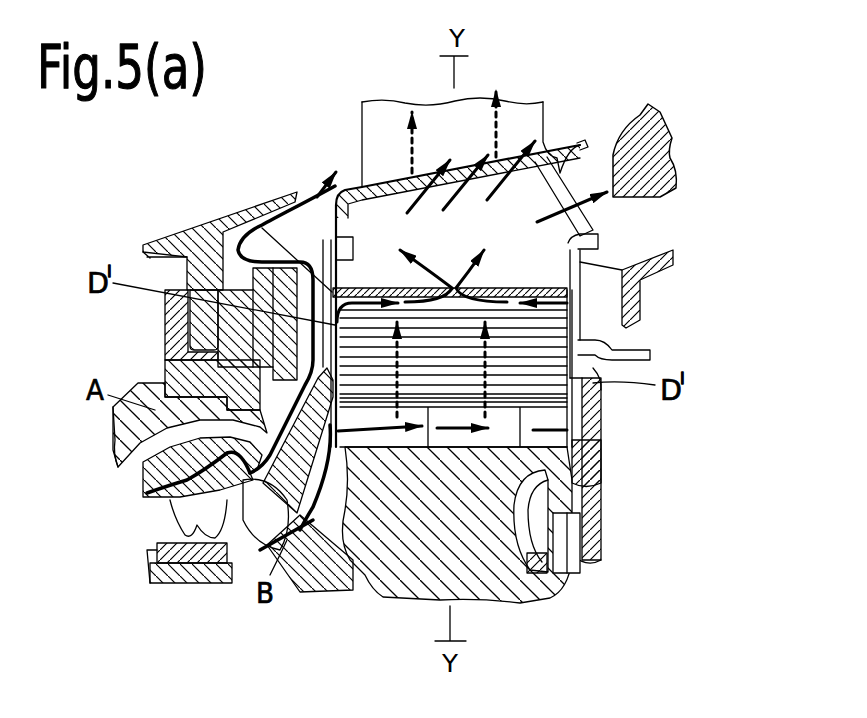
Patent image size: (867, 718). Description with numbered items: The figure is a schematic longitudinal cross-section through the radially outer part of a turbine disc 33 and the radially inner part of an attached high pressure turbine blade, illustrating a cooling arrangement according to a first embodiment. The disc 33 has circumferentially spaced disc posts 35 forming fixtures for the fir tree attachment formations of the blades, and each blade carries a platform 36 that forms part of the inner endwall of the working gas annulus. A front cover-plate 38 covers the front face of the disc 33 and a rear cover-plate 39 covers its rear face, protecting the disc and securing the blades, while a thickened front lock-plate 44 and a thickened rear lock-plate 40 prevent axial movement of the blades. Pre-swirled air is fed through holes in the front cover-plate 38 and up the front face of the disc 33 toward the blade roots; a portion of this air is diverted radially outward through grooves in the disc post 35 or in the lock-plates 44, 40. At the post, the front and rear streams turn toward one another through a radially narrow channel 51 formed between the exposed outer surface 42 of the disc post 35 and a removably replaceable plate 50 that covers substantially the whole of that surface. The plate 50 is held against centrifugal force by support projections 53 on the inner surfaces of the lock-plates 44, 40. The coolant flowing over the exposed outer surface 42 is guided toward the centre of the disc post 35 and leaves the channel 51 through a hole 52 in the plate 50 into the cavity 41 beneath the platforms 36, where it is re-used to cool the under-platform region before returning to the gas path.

The turbine disc 33 is at (457, 530).
The disc post 35 is at (547, 357).
The platform 36 is at (372, 185).
The front cover-plate 38 is at (187, 400).
The rear cover-plate 39 is at (590, 432).
The rear lock-plate 40 is at (593, 240).
The cavity 41 is at (468, 247).
The exposed outer surface 42 is at (623, 300).
The front lock-plate 44 is at (222, 219).
The plate 50 is at (518, 292).
The channel 51 is at (500, 235).
The hole 52 is at (445, 285).
The support projection 53 is at (348, 262).